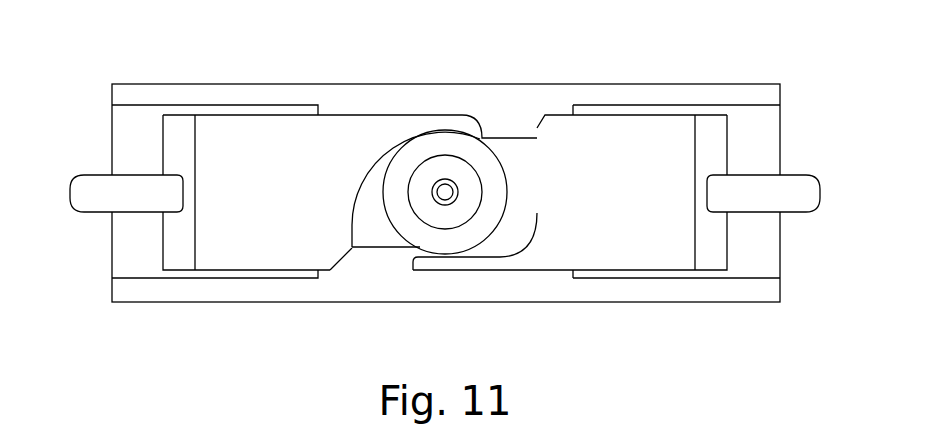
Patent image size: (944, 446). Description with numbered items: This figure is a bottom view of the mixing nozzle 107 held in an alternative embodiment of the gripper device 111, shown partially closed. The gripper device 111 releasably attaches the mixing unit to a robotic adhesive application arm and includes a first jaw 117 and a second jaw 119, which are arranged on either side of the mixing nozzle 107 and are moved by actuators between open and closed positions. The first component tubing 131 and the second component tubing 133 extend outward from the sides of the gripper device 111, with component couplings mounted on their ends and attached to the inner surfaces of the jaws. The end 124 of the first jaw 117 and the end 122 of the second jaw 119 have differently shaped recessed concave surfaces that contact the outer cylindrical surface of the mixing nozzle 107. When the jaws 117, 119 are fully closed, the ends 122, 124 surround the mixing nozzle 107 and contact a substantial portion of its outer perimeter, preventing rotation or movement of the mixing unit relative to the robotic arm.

The gripper device 111 is at (205, 77).
The end of the first jaw 124 is at (375, 130).
The first jaw 117 is at (277, 250).
The second jaw 119 is at (590, 250).
The end of the second jaw 122 is at (488, 262).
The mixing nozzle 107 is at (450, 130).
The first component tubing 131 is at (83, 185).
The second component tubing 133 is at (808, 180).